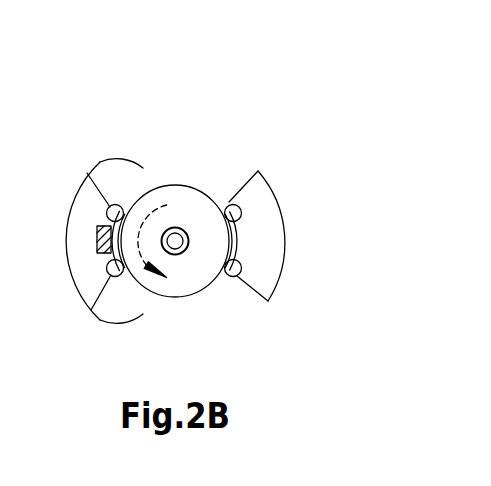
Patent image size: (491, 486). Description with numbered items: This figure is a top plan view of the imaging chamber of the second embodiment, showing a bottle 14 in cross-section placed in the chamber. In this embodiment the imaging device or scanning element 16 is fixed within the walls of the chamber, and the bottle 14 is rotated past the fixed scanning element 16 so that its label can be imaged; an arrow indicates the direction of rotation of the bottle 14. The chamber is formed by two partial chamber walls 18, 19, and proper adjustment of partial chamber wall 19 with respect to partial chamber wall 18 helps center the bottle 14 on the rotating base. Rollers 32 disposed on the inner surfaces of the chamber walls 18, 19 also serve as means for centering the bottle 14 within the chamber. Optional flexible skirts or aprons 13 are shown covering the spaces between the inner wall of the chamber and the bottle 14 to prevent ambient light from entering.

The flexible skirts or aprons 13 is at (115, 157).
The bottle 14 is at (188, 212).
The imaging device or scanning element 16 is at (96, 227).
The partial chamber wall 18 is at (76, 263).
The partial chamber wall 19 is at (260, 242).
The rollers 32 is at (80, 186).